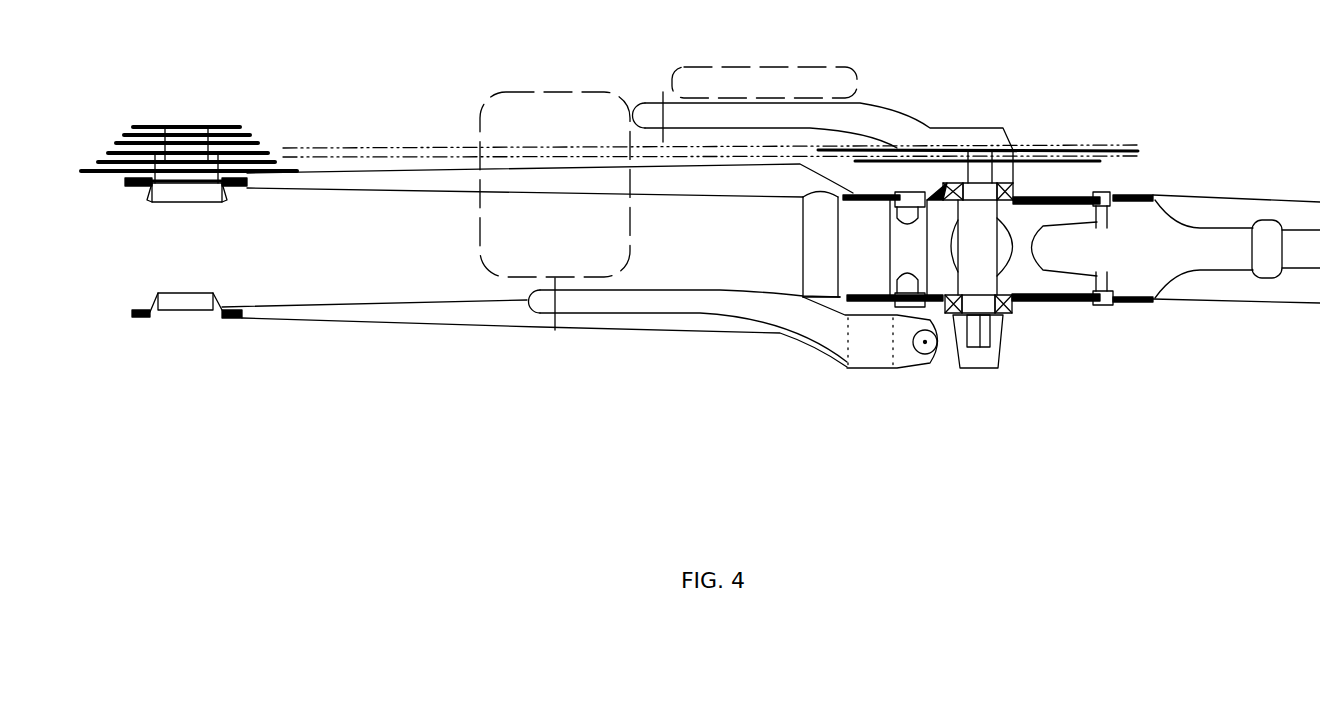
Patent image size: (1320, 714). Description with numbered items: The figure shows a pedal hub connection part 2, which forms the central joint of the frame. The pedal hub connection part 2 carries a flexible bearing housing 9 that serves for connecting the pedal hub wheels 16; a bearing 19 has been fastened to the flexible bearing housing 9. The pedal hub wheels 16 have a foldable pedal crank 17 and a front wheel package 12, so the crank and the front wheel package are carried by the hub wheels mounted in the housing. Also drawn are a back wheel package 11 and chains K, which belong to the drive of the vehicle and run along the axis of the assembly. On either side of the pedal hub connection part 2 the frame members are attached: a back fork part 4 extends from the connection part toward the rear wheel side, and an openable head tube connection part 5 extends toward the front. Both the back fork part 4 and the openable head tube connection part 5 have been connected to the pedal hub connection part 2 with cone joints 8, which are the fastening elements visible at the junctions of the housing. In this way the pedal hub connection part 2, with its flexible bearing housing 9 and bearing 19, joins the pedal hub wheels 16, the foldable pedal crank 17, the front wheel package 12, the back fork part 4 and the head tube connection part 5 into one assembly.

The pedal hub connection part 2 is at (1035, 282).
The back fork part 4 is at (457, 308).
The openable head tube connection part 5 is at (1223, 207).
The cone joints 8 is at (897, 287).
The flexible bearing housing 9 is at (142, 312).
The back wheel package 11 is at (222, 120).
The front wheel package 12 is at (1102, 158).
The pedal hub wheels 16 is at (980, 155).
The foldable pedal crank 17 is at (822, 327).
The bearing 19 is at (192, 302).
The chains K is at (434, 150).